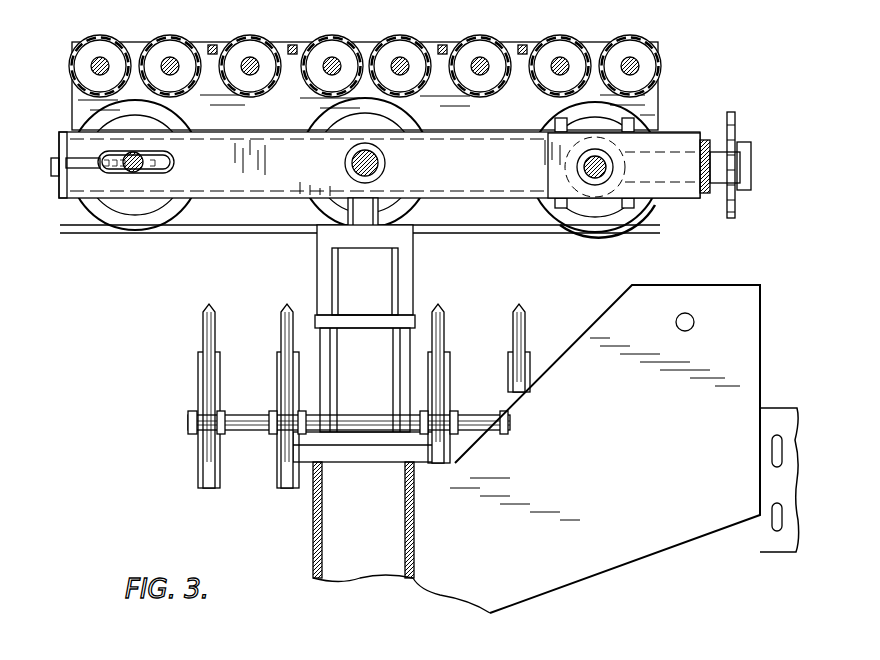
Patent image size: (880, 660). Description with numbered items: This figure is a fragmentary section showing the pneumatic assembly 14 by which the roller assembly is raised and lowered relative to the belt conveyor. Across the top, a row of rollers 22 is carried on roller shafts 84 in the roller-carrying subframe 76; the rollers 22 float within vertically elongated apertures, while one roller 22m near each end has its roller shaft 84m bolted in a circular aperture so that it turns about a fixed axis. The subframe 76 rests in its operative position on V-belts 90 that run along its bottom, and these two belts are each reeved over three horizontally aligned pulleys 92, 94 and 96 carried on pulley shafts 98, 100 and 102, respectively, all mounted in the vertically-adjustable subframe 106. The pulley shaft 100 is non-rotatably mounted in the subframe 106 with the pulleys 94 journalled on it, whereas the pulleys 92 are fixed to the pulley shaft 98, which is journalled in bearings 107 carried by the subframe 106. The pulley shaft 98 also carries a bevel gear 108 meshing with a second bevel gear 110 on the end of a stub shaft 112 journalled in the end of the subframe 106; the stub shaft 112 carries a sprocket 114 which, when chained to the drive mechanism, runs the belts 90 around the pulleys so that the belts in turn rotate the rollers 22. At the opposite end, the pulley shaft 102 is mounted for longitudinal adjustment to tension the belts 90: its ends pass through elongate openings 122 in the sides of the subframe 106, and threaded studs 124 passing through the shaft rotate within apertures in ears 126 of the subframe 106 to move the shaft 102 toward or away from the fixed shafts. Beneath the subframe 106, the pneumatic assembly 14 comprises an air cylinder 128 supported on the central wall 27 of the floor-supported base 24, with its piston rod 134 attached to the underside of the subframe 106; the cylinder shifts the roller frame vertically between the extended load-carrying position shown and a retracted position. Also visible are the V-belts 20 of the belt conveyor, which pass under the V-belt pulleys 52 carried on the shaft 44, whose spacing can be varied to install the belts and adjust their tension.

The pneumatic assembly 14 is at (320, 286).
The V-belts 20 is at (280, 312).
The rollers 22 is at (70, 64).
The roller 22m is at (175, 35).
The base 24 is at (513, 598).
The central wall 27 is at (405, 553).
The shaft 44 is at (250, 428).
The V-belt pulleys 52 is at (277, 368).
The roller-carrying subframe 76 is at (593, 48).
The roller shaft 84 is at (95, 68).
The roller shaft 84m is at (168, 58).
The V-belts 90 is at (508, 98).
The pulleys 92 is at (584, 226).
The pulleys 94 is at (332, 215).
The pulleys 96 is at (115, 228).
The pulley shaft 98 is at (588, 165).
The pulley shaft 100 is at (386, 164).
The pulley shaft 102 is at (145, 168).
The vertically-adjustable subframe 106 is at (233, 200).
The bearings 107 is at (595, 180).
The bevel gear 108 is at (542, 150).
The bevel gear 110 is at (632, 154).
The stub shaft 112 is at (722, 182).
The sprocket 114 is at (736, 195).
The elongate openings 122 is at (170, 158).
The threaded studs 124 is at (92, 168).
The ears 126 is at (58, 188).
The air cylinder 128 is at (365, 380).
The piston rod 134 is at (382, 240).